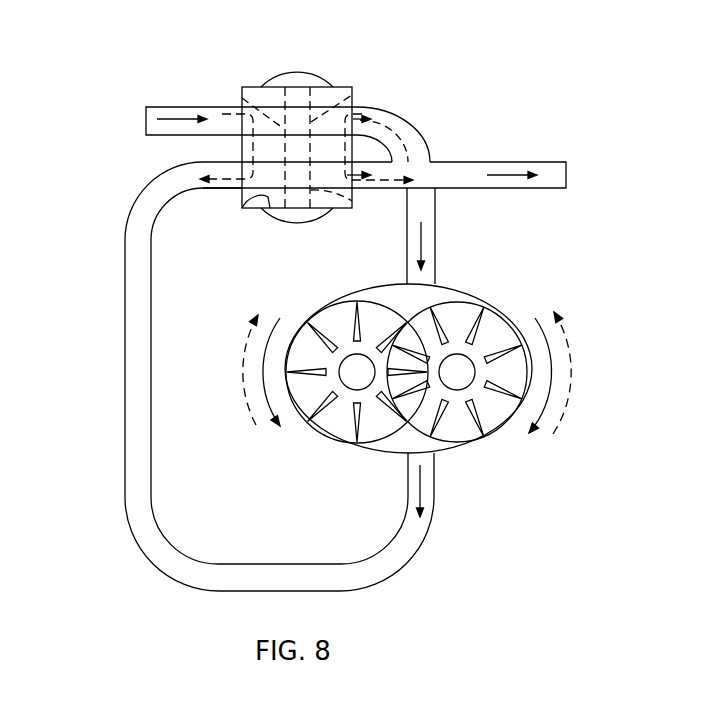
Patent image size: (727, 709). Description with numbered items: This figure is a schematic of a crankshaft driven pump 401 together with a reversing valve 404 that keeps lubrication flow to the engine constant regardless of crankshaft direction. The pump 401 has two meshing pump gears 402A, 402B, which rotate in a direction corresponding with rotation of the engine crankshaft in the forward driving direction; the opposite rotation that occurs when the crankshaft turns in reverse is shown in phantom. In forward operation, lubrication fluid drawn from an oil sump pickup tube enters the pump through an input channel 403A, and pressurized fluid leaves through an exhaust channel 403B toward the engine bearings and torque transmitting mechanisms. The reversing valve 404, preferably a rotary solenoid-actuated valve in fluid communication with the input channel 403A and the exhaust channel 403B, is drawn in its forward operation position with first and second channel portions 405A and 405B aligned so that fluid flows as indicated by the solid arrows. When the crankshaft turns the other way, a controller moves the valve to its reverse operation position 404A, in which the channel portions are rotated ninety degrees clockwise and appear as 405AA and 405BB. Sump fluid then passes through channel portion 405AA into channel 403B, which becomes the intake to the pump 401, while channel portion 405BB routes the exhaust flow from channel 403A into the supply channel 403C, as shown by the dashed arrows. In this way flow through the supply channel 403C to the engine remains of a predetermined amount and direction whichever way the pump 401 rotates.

The crankshaft driven pump 401 is at (549, 291).
The pump gear 402A is at (377, 441).
The pump gear 402B is at (440, 454).
The input channel 403A is at (435, 241).
The exhaust channel 403B is at (434, 494).
The supply channel 403C is at (497, 161).
The reversing valve 404 is at (326, 86).
The reverse operation position 404A is at (344, 103).
The first channel portion 405A is at (242, 124).
The first channel portion in rotated position 405AA is at (240, 96).
The second channel portion 405B is at (243, 208).
The second channel portion in rotated position 405BB is at (352, 201).